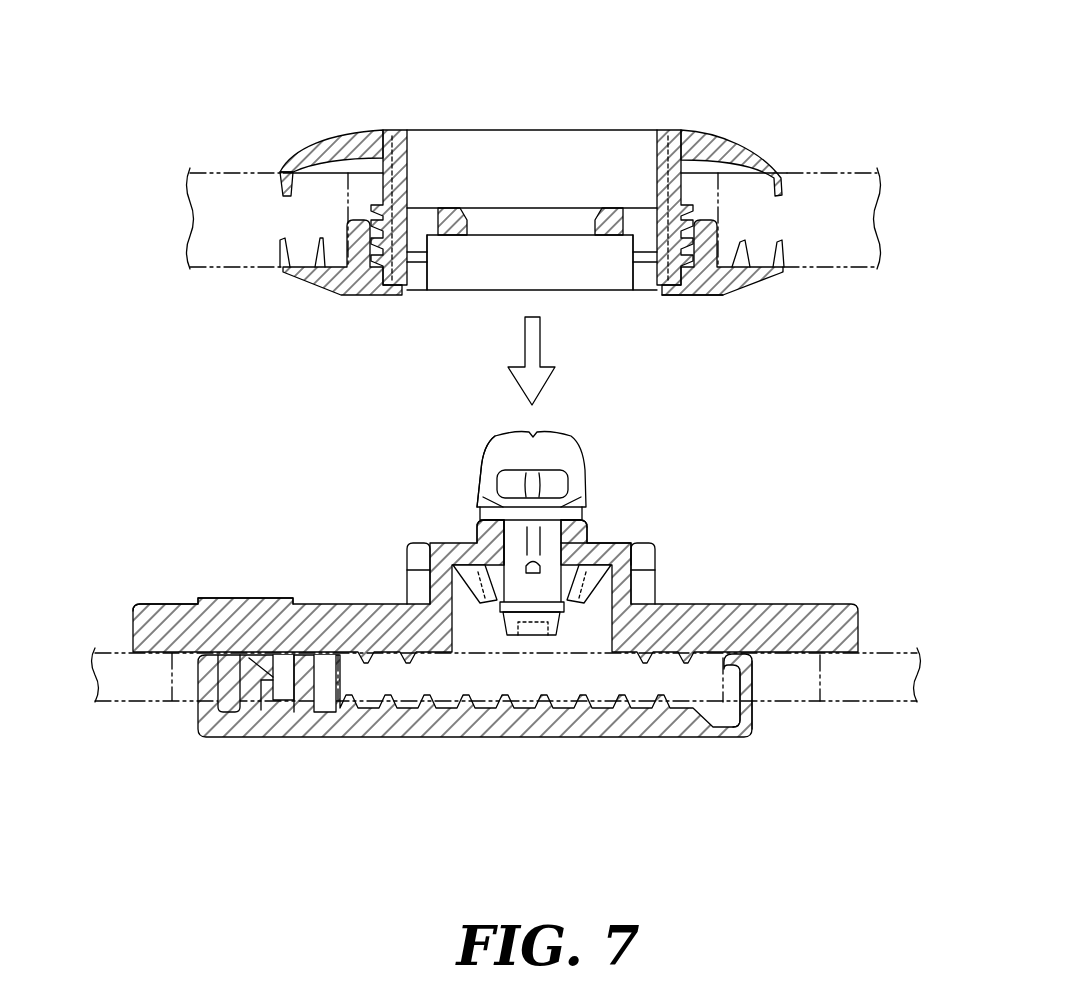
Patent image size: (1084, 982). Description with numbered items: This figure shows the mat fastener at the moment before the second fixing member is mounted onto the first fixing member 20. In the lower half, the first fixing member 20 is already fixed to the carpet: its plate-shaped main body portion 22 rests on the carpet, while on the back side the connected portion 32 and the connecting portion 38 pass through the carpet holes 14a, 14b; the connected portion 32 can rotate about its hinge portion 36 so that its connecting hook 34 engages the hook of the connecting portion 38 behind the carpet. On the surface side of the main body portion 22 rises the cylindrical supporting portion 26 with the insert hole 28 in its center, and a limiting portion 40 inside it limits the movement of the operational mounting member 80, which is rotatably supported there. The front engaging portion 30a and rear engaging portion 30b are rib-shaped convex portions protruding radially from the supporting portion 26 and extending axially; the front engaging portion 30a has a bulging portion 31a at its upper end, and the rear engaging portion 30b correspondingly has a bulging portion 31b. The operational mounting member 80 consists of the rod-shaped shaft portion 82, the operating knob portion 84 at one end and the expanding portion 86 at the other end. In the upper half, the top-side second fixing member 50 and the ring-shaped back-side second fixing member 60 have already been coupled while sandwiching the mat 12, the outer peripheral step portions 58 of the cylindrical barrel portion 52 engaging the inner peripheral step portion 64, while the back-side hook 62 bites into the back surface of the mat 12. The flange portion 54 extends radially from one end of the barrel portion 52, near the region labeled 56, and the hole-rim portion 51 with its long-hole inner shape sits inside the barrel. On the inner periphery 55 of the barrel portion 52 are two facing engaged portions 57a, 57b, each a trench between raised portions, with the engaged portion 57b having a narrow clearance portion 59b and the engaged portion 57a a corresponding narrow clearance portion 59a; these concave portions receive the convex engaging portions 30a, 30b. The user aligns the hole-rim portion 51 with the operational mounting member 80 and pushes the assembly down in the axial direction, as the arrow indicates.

The mat 12 is at (860, 172).
The carpet hole 14a is at (828, 668).
The carpet hole 14b is at (170, 674).
The first fixing member 20 is at (810, 617).
The main body portion 22 is at (175, 622).
The supporting portion 26 is at (621, 554).
The insert hole 28 is at (500, 538).
The front engaging portion 30a is at (406, 584).
The rear engaging portion 30b is at (657, 582).
The bulging portion 31a is at (406, 552).
The engaging projection 31b is at (656, 553).
The connected portion 32 is at (673, 729).
The connecting hook 34 is at (248, 677).
The hinge portion 36 is at (748, 680).
The connecting portion 38 is at (290, 683).
The limiting portion 40 is at (203, 678).
The top-side second fixing member 50 is at (680, 137).
The hole-rim portion 51 is at (598, 220).
The barrel portion 52 is at (402, 178).
The flange portion 54 is at (372, 129).
The inner periphery 55 is at (656, 213).
The lip tip 56 is at (278, 188).
The engaged portion 57a is at (643, 282).
The engaged portion 57b is at (417, 282).
The outer peripheral step portions 58 is at (684, 182).
The groove 59a is at (632, 254).
The narrow clearance portion 59b is at (428, 254).
The back-side second fixing member 60 is at (737, 285).
The back-side hook 62 is at (789, 254).
The inner peripheral step portion 64 is at (367, 264).
The operational mounting member 80 is at (557, 453).
The shaft portion 82 is at (548, 547).
The operating knob portion 84 is at (497, 451).
The expanding portion 86 is at (549, 636).